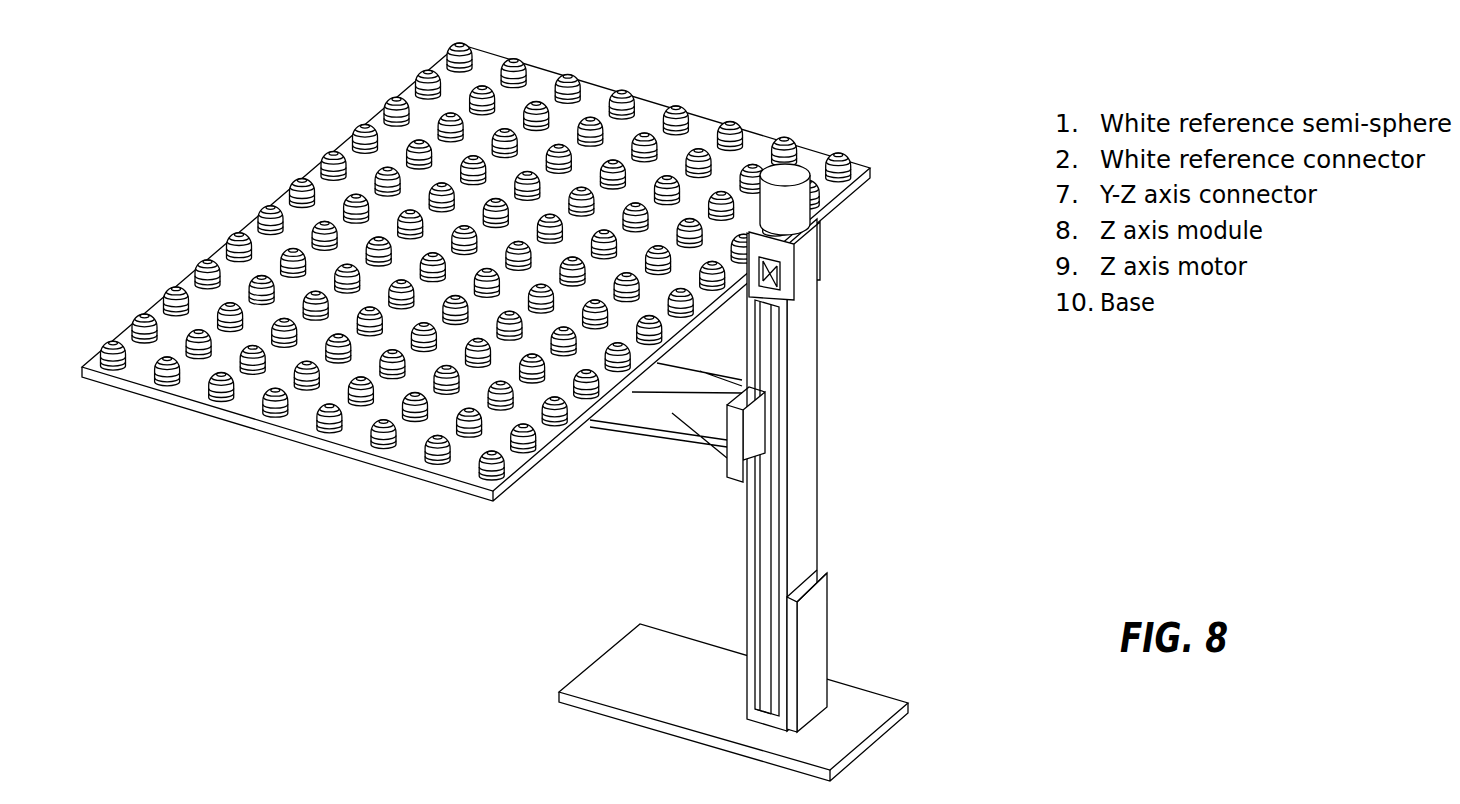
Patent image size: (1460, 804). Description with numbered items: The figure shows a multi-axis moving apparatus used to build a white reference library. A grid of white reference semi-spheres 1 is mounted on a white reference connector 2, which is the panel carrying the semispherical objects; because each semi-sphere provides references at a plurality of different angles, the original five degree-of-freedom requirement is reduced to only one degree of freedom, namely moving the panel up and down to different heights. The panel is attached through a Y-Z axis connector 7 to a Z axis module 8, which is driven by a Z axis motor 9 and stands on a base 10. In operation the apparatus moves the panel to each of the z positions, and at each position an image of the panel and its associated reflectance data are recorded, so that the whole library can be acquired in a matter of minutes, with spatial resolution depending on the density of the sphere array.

The white reference semi-sphere 1 is at (203, 263).
The white reference connector 2 is at (198, 392).
The Y-Z axis connector 7 is at (679, 413).
The Z axis module 8 is at (795, 440).
The Z axis motor 9 is at (788, 206).
The base 10 is at (813, 688).